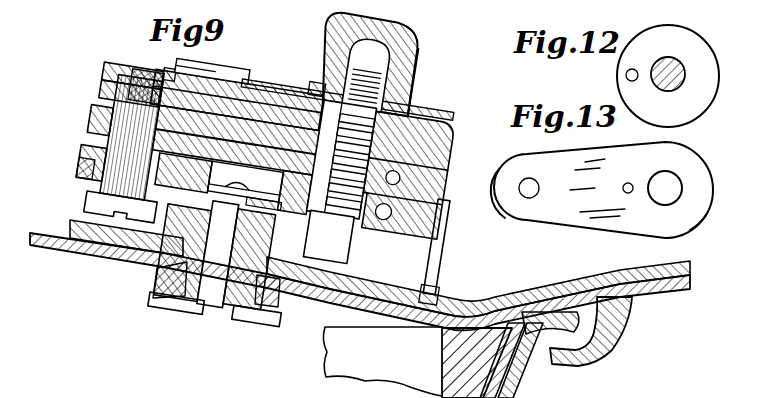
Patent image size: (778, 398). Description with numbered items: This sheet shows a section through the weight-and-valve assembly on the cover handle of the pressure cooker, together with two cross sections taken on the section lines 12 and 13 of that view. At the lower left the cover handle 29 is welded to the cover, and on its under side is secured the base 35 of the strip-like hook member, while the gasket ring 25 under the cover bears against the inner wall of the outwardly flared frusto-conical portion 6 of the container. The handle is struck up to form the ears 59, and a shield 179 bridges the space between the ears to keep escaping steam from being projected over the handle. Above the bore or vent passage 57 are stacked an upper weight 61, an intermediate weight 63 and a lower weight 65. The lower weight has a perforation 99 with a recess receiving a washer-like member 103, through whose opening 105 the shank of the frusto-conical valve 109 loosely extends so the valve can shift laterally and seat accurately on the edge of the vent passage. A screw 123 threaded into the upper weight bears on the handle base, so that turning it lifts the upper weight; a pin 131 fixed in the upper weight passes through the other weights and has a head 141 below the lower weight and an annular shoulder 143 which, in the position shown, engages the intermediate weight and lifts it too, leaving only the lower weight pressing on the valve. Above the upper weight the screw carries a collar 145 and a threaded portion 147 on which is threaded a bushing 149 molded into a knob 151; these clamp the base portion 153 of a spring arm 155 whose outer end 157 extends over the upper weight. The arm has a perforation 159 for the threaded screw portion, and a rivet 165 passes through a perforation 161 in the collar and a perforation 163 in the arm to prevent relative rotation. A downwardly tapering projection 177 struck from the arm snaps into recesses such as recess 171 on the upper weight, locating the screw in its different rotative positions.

In FIG. 9, the frusto-conical portion 6 is at (520, 388).
In FIG. 9, the section line 12- 12 is at (240, 102).
In FIG. 9, the section line 13- 13 is at (170, 86).
In FIG. 9, the gasket ring 25 is at (442, 365).
In FIG. 9, the handle 29 is at (605, 277).
In FIG. 9, the base of strip-like member 35 is at (637, 300).
In FIG. 9, the bore or vent passage 57 is at (207, 308).
In FIG. 9, the ears 59 is at (447, 284).
In FIG. 9, the upper weight 61 is at (108, 66).
In FIG. 9, the intermediate weight 63 is at (93, 116).
In FIG. 9, the lower weight 65 is at (90, 147).
In FIG. 9, the perforation 99 is at (246, 185).
In FIG. 9, the washer-like member 103 is at (200, 203).
In FIG. 9, the opening 105 is at (268, 214).
In FIG. 9, the frusto-conical valve 109 is at (230, 233).
In FIG. 9, the screw 123 is at (333, 243).
In FIG. 9, the pin 131 is at (110, 79).
In FIG. 9, the head 141 is at (88, 188).
In FIG. 9, the annular shoulder 143 is at (88, 165).
In FIG. 9, the collar 145 is at (410, 117).
In FIG. 12, the collar 145 is at (687, 42).
In FIG. 9, the screw-threaded portion 147 is at (418, 60).
In FIG. 12, the screw-threaded portion 147 is at (660, 62).
In FIG. 9, the bushing 149 is at (347, 47).
In FIG. 9, the knob 151 is at (333, 20).
In FIG. 9, the base portion of spring arm 153 is at (407, 117).
In FIG. 13, the base portion of spring arm 153 is at (687, 218).
In FIG. 9, the spring arm 155 is at (250, 90).
In FIG. 13, the spring arm 155 is at (572, 218).
In FIG. 13, the outer end 157 is at (517, 213).
In FIG. 13, the perforation 159 is at (682, 175).
In FIG. 12, the perforation 161 is at (626, 75).
In FIG. 13, the perforation 163 is at (629, 184).
In FIG. 9, the rivet 165 is at (312, 78).
In FIG. 9, the recess 171 is at (174, 74).
In FIG. 9, the projection 177 is at (213, 72).
In FIG. 13, the projection 177 is at (530, 186).
In FIG. 9, the shield 179 is at (447, 265).